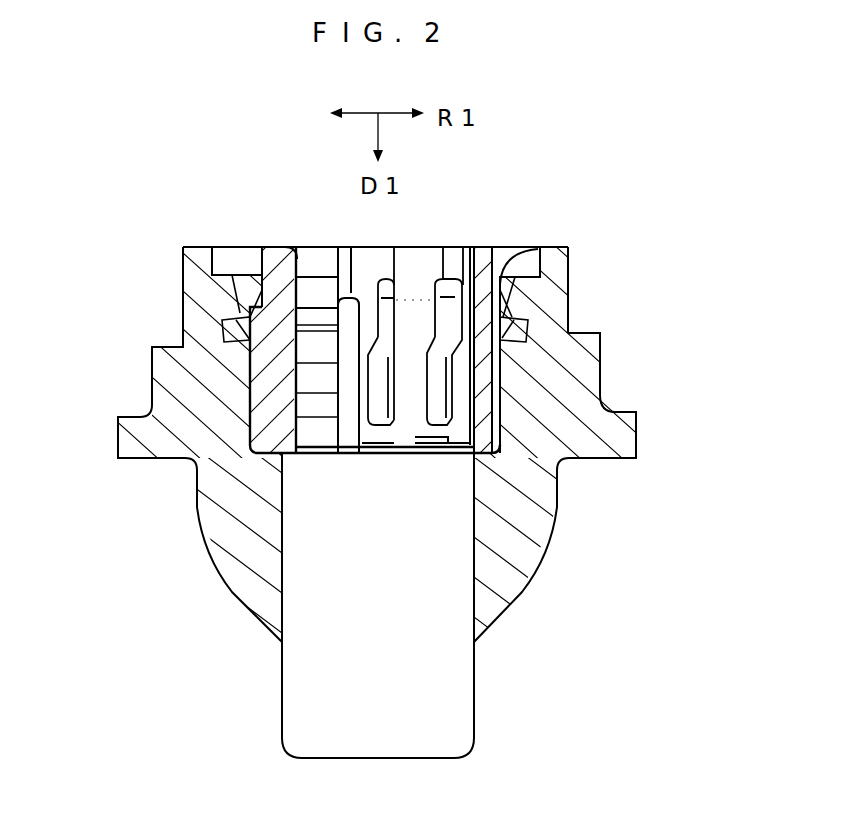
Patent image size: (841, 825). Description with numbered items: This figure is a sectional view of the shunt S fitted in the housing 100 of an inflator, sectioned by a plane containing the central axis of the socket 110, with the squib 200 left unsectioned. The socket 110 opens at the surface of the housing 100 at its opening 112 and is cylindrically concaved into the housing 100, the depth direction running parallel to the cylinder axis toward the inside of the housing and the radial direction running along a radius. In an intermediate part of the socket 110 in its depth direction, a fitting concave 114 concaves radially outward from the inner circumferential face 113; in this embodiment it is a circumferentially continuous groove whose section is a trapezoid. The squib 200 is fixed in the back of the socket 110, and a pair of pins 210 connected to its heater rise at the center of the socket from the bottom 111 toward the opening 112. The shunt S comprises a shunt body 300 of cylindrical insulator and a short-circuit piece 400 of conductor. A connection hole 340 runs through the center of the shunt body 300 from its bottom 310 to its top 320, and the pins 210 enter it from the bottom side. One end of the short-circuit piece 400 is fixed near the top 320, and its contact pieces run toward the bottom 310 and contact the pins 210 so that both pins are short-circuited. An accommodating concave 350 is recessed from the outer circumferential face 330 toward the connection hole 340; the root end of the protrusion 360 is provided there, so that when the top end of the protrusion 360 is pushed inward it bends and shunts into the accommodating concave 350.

The housing 100 is at (402, 412).
The socket 110 is at (417, 339).
The bottom 111 is at (546, 524).
The opening 112 is at (558, 247).
The inner circumferential face 113 is at (500, 383).
The fitting concave 114 is at (603, 338).
The squib 200 is at (436, 467).
The pins 210 is at (349, 313).
The shunt body 300 is at (364, 416).
The bottom 310 is at (273, 447).
The top 320 is at (266, 258).
The outer circumferential face 330 is at (257, 390).
The connection hole 340 is at (298, 418).
The accommodating concave 350 is at (247, 311).
The protrusion 360 is at (224, 330).
The short-circuit piece 400 is at (455, 305).
The shunt S is at (445, 240).